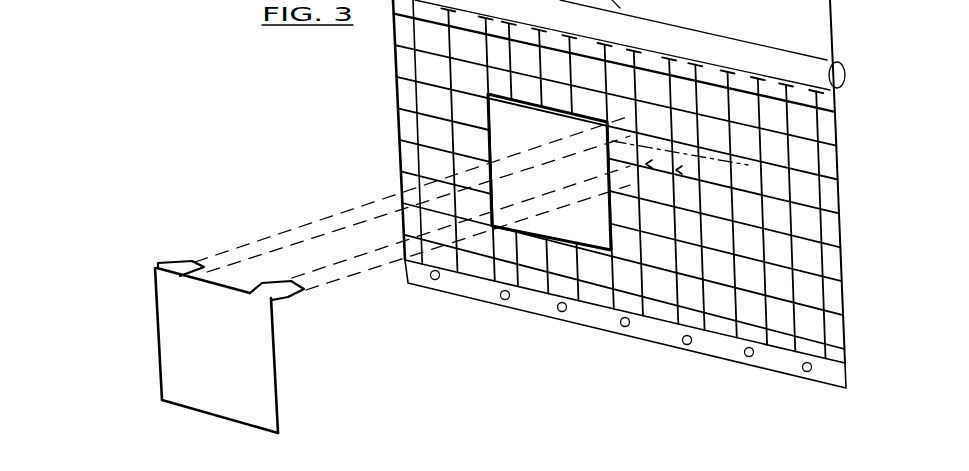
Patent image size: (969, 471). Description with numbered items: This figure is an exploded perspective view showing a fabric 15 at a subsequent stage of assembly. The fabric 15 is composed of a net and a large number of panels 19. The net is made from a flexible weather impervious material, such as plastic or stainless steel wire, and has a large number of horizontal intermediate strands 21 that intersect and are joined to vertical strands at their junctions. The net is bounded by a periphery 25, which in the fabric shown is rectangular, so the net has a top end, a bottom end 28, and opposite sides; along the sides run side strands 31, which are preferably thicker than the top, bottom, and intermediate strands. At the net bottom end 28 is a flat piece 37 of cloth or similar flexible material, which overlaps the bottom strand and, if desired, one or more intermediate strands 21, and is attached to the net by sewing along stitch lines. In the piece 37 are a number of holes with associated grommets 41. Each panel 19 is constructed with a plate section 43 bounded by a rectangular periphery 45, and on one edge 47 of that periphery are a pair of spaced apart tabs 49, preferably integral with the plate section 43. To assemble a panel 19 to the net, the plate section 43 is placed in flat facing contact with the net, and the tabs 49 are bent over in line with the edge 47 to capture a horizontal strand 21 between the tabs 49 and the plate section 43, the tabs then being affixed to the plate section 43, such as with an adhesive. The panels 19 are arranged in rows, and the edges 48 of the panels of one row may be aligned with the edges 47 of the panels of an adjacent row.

The fabric 15 is at (868, 181).
The panel 19 is at (480, 141).
The horizontal intermediate strand 21 is at (425, 82).
The periphery 25 is at (392, 126).
The bottom end 28 is at (758, 0).
The side strand 31 is at (394, 96).
The flat piece 37 is at (407, 271).
The grommet 41 is at (558, 309).
The plate section 43 is at (163, 304).
The rectangular periphery 45 is at (148, 290).
The edge 47 is at (236, 283).
The edge 48 is at (178, 407).
The tab 49 is at (177, 262).